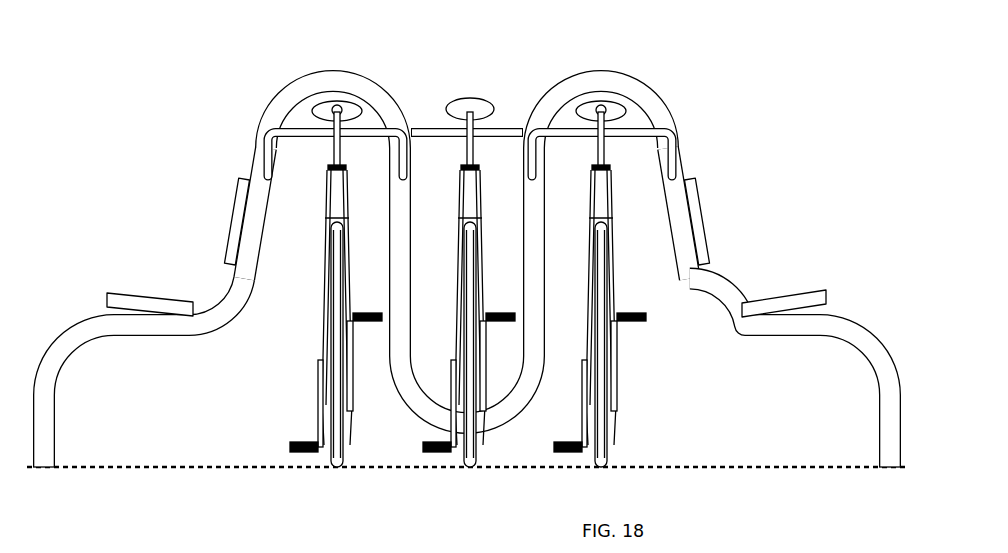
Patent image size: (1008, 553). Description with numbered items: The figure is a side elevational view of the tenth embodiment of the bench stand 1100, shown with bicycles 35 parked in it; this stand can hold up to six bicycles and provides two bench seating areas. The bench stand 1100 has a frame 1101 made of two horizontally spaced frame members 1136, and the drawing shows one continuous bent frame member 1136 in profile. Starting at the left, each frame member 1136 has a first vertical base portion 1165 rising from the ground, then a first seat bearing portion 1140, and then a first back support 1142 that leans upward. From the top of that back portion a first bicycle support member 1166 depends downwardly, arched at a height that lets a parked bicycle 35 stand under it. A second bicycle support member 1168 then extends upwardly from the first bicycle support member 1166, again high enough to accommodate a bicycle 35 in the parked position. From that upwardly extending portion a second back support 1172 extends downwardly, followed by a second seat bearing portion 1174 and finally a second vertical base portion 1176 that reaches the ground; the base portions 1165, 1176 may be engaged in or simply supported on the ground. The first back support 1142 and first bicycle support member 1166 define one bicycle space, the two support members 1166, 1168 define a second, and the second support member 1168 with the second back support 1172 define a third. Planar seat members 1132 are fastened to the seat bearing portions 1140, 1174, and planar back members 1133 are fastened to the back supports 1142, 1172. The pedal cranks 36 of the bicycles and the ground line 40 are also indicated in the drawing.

The bicycle 35 is at (334, 150).
The bicycle pedal crank 36 is at (330, 413).
The ground surface 40 is at (283, 468).
The bench stand 1100 is at (467, 251).
The frame 1101 is at (717, 251).
The planar seat member 1132 is at (113, 292).
The planar back member 1133 is at (231, 222).
The frame member 1136 is at (607, 72).
The first seat bearing portion 1140 is at (157, 337).
The first back support 1142 is at (268, 215).
The first vertical base portion 1165 is at (83, 440).
The first bicycle support member 1166 is at (390, 95).
The second bicycle support member 1168 is at (547, 223).
The second back support 1172 is at (665, 220).
The second seat bearing portion 1174 is at (808, 332).
The second vertical base portion 1176 is at (878, 397).